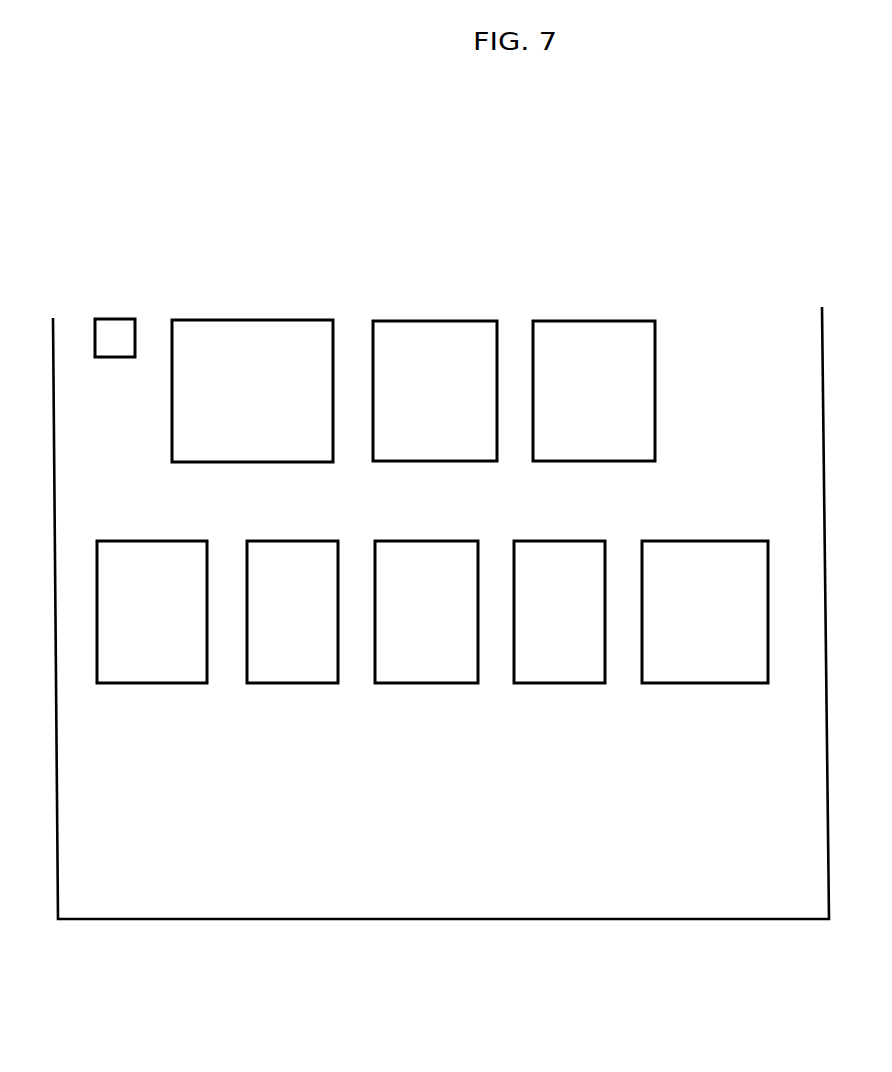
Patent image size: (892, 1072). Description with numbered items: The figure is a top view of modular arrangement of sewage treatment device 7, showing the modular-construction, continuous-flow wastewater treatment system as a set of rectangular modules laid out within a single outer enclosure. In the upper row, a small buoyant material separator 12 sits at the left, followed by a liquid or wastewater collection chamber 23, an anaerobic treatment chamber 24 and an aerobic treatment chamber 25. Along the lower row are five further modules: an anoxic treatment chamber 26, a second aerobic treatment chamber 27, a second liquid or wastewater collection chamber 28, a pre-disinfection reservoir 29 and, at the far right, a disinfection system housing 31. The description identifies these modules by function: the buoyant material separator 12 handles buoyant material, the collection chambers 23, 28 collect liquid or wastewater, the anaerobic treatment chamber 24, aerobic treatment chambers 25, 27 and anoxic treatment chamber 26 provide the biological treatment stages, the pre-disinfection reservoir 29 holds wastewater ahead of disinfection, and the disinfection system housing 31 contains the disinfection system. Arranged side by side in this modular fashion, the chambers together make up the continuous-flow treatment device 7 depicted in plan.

The top view of modular arrangement of sewage treatment device 7 is at (443, 919).
The buoyant material separator 12 is at (116, 319).
The liquid or wastewater collection chamber 23 is at (253, 320).
The anaerobic treatment chamber 24 is at (436, 321).
The aerobic treatment chamber 25 is at (593, 321).
The anoxic treatment chamber 26 is at (148, 683).
The aerobic treatment chamber 27 is at (296, 683).
The liquid or wastewater collection chamber 28 is at (425, 683).
The pre-disinfection reservoir 29 is at (563, 683).
The disinfection system housing 31 is at (705, 683).